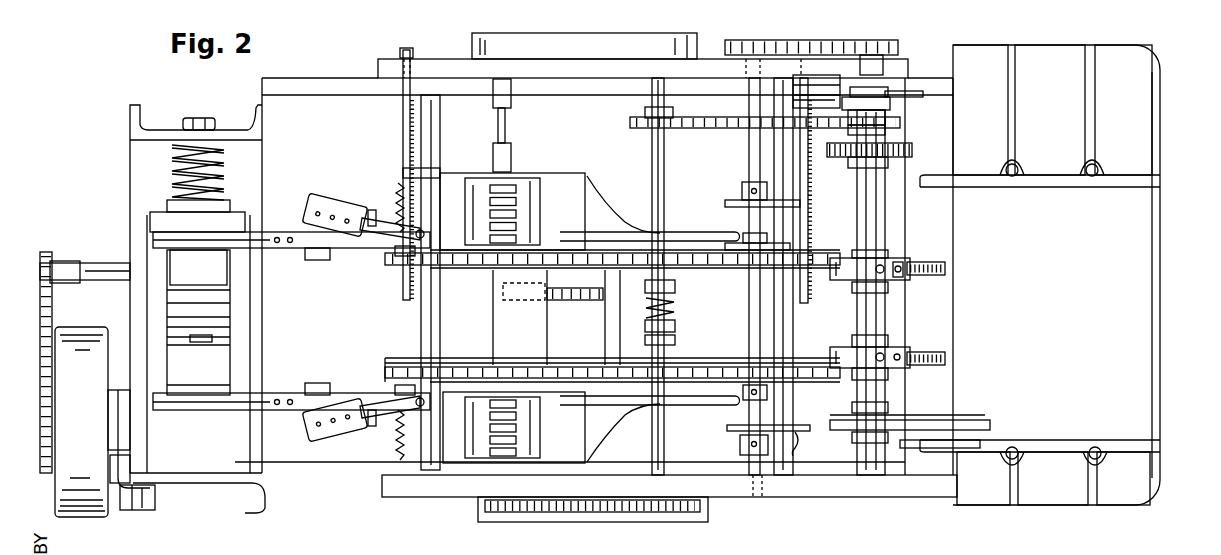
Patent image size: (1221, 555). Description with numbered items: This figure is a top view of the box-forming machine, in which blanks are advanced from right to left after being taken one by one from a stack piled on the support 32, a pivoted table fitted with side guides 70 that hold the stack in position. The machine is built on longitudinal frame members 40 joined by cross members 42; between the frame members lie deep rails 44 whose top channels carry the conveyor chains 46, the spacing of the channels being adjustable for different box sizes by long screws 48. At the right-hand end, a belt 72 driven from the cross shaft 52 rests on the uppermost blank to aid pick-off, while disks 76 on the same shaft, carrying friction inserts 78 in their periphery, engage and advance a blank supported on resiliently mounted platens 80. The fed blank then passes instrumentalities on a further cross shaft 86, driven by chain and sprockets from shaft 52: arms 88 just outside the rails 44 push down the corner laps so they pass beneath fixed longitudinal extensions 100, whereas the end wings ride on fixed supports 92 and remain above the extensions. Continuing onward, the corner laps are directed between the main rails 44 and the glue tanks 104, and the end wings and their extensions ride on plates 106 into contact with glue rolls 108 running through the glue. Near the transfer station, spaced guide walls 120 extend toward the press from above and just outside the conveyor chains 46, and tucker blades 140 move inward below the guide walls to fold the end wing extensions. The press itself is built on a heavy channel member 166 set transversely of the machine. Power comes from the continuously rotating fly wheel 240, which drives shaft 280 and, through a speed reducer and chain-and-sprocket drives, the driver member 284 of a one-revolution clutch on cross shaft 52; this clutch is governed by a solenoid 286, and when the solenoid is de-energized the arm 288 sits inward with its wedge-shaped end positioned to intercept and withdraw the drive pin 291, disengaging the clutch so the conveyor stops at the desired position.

The support 32 is at (1160, 230).
The longitudinal frame members 40 is at (470, 62).
The cross members 42 is at (442, 145).
The deep rails 44 is at (702, 364).
The conveyor chains 46 is at (476, 366).
The long screws 48 is at (403, 149).
The cross shaft 52 is at (888, 171).
The side guides 70 is at (1118, 187).
The belt 72 is at (940, 432).
The disks 76 is at (844, 286).
The friction inserts 78 is at (896, 280).
The resiliently mounted platens 80 is at (908, 262).
The cross shaft 86 is at (748, 155).
The arms 88 is at (794, 445).
The fixed supports 92 is at (799, 424).
The fixed longitudinal extensions 100 is at (682, 230).
The glue tanks 104 is at (556, 171).
The plates 106 is at (630, 212).
The glue rolls 108 is at (540, 221).
The guide walls 120 is at (225, 392).
The tucker blades 140 is at (330, 212).
The channel member 166 is at (130, 191).
The fly wheel 240 is at (76, 517).
The shaft 280 is at (108, 273).
The driver member 284 is at (895, 106).
The solenoid 286 is at (786, 95).
The arm 288 is at (906, 110).
The drive pin 291 is at (903, 67).